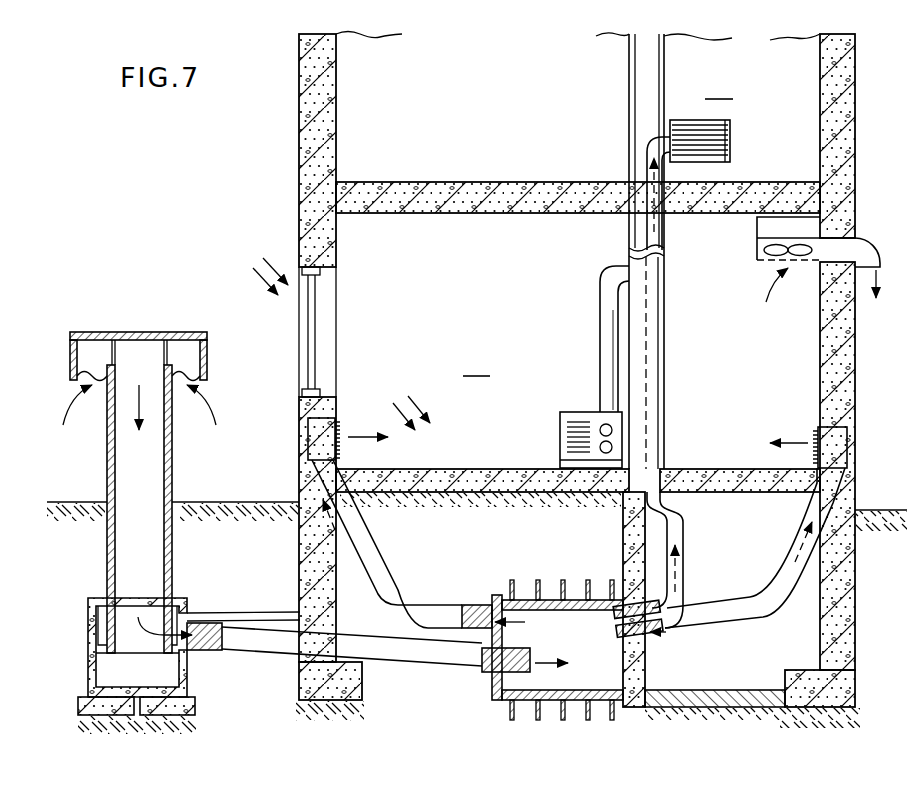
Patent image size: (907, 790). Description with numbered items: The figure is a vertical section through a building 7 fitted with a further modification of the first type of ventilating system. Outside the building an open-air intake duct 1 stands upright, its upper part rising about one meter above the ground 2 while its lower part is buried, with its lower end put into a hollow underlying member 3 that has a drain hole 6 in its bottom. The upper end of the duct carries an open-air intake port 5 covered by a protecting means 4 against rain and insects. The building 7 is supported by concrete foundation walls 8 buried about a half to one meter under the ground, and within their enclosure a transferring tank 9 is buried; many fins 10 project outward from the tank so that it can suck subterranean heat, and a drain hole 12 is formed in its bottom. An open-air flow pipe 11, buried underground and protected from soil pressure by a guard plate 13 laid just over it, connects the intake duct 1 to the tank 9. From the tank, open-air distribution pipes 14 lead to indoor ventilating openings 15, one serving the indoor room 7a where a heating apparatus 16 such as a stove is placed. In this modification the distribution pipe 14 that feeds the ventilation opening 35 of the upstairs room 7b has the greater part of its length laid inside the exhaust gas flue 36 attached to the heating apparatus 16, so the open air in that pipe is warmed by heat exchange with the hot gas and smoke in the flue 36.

The open-air intake duct 1 is at (108, 452).
The ground 2 is at (197, 502).
The hollow underlying member 3 is at (88, 618).
The protecting means 4 is at (86, 332).
The open-air intake port 5 is at (133, 348).
The drain hole 6 is at (137, 705).
The building 7 is at (300, 123).
The indoor room 7a is at (477, 364).
The upstairs room 7b is at (719, 87).
The concrete foundation walls 8 is at (825, 632).
The transferring tank 9 is at (548, 600).
The fins 10 is at (538, 720).
The open-air flow pipe 11 is at (262, 645).
The drain hole 12 is at (603, 722).
The guard plate 13 is at (240, 613).
The open-air distribution pipes 14 is at (383, 600).
The indoor ventilating openings 15 is at (338, 420).
The heating apparatus 16 is at (601, 365).
The ventilation opening 35 is at (722, 128).
The exhaust gas flue 36 is at (650, 407).